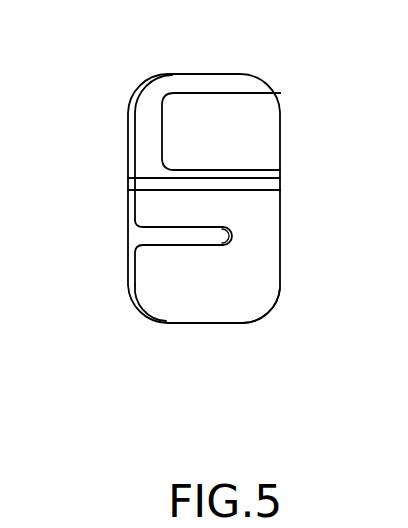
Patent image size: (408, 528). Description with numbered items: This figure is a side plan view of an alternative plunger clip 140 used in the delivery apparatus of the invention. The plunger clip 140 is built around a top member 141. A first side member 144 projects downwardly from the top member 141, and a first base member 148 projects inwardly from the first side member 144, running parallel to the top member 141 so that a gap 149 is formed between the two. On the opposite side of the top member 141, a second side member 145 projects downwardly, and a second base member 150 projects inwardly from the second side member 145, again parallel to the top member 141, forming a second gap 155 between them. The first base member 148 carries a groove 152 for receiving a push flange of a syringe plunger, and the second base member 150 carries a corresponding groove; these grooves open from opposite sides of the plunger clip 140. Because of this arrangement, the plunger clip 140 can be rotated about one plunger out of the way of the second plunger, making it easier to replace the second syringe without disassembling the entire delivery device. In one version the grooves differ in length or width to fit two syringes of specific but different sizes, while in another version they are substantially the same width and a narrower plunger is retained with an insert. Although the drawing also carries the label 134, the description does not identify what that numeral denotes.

The plunger clip 140 is at (215, 348).
The first side member 144 is at (133, 92).
The first base member 148 is at (236, 78).
The gap 149 is at (283, 95).
The window opening 134 is at (252, 136).
The top member 141 is at (130, 180).
The second base member 150 is at (265, 198).
The groove 152 is at (150, 236).
The second side member 145 is at (275, 294).
The gap 155 is at (136, 298).